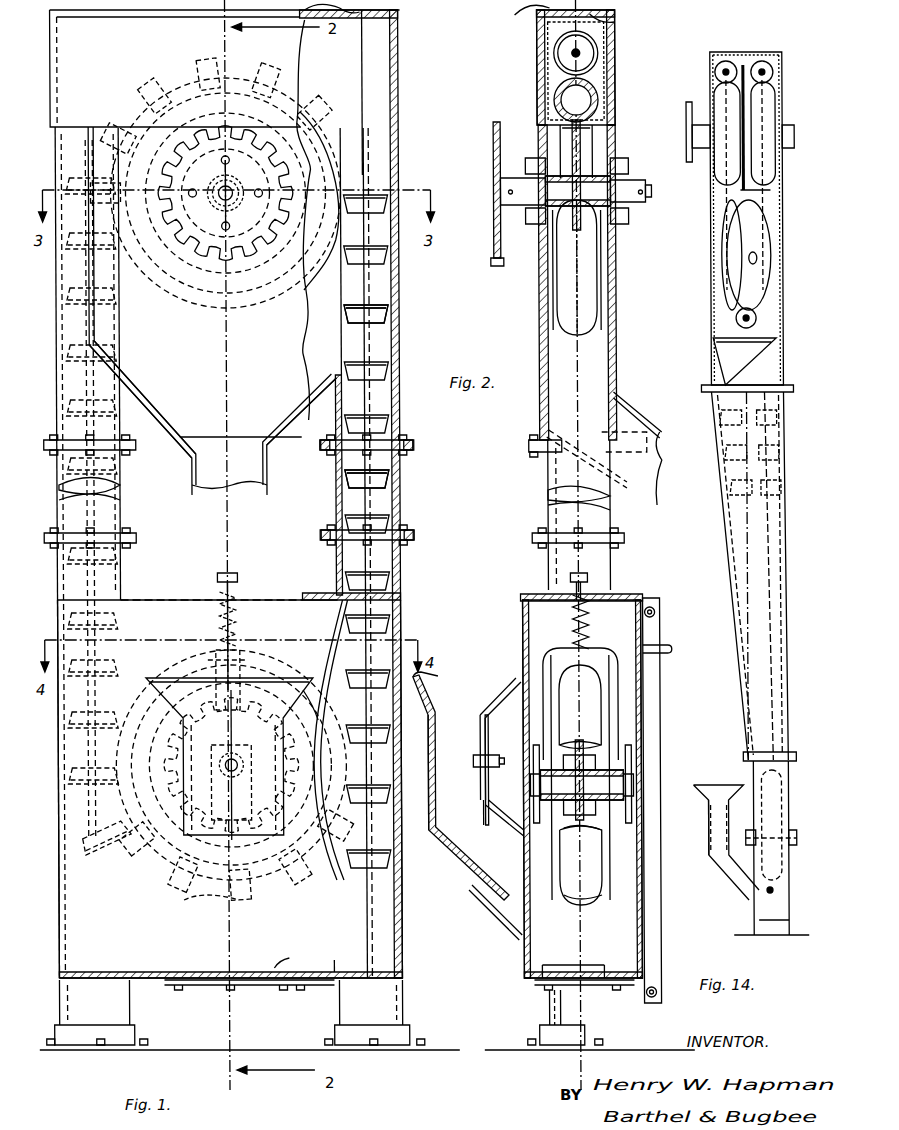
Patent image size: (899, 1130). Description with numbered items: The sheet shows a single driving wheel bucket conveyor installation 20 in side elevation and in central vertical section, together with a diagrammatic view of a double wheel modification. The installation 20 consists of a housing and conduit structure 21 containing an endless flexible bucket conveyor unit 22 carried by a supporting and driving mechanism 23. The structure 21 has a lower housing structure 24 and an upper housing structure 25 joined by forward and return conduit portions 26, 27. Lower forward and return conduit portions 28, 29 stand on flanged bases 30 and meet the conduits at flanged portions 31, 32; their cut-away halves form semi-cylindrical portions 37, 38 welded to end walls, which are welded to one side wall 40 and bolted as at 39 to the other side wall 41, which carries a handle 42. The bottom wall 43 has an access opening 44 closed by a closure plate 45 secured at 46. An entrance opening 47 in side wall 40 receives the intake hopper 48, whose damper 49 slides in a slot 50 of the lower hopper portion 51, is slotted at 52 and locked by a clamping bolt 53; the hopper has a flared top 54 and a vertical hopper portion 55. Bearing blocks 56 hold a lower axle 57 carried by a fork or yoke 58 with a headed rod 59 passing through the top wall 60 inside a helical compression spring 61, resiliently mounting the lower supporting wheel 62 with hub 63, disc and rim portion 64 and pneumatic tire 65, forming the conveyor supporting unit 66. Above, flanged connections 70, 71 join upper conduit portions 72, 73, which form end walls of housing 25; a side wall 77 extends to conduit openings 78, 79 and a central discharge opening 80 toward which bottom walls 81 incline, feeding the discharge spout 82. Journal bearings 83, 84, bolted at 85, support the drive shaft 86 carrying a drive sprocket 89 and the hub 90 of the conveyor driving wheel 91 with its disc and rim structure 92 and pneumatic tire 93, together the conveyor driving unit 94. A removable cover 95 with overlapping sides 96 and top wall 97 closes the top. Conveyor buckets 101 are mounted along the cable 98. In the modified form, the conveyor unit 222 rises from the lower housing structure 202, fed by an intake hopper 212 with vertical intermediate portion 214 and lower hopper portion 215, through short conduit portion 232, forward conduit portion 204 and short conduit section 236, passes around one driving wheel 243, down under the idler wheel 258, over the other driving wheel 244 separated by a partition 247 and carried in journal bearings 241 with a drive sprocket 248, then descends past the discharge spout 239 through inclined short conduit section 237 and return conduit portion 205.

In FIG. 1, the bucket conveyor installation 20 is at (405, 58).
In FIG. 1, the housing and conduit structure 21 is at (398, 360).
In FIG. 1, the endless flexible bucket conveyor unit 22 is at (372, 408).
In FIG. 2, the endless flexible bucket conveyor unit 22 is at (585, 50).
In FIG. 1, the supporting and driving mechanism 23 is at (322, 272).
In FIG. 1, the lower housing structure 24 is at (402, 910).
In FIG. 2, the lower housing structure 24 is at (520, 960).
In FIG. 1, the upper housing structure 25 is at (398, 152).
In FIG. 2, the upper housing structure 25 is at (535, 298).
In FIG. 1, the forward conduit portion 26 is at (398, 488).
In FIG. 1, the return conduit portion 27 is at (120, 478).
In FIG. 2, the return conduit portion 27 is at (579, 498).
In FIG. 1, the forward conduit portion 28 is at (380, 997).
In FIG. 1, the return conduit portion 29 is at (128, 997).
In FIG. 2, the return conduit portion 29 is at (600, 1022).
In FIG. 1, the flanged base 30 is at (132, 1030).
In FIG. 2, the flanged base 30 is at (535, 1033).
In FIG. 1, the flanged portion 31 is at (412, 538).
In FIG. 2, the flanged portion 31 is at (530, 535).
In FIG. 1, the flanged portion 32 is at (135, 540).
In FIG. 1, the semi-cylindrical portion 37 is at (398, 876).
In FIG. 1, the semi-cylindrical portion 38 is at (52, 865).
In FIG. 2, the bolt 39 is at (652, 612).
In FIG. 1, the side wall 40 is at (180, 590).
In FIG. 2, the side wall 40 is at (522, 620).
In FIG. 2, the side wall 41 is at (655, 712).
In FIG. 2, the handle 42 is at (665, 645).
In FIG. 1, the bottom wall 43 is at (345, 975).
In FIG. 2, the bottom wall 43 is at (582, 980).
In FIG. 1, the access opening 44 is at (287, 955).
In FIG. 2, the access opening 44 is at (603, 965).
In FIG. 1, the closure plate 45 is at (255, 988).
In FIG. 2, the closure plate 45 is at (570, 985).
In FIG. 1, the bolt 46 is at (298, 990).
In FIG. 1, the entrance opening 47 is at (198, 930).
In FIG. 2, the entrance opening 47 is at (510, 915).
In FIG. 1, the intake hopper 48 is at (262, 698).
In FIG. 2, the intake hopper 48 is at (440, 690).
In FIG. 1, the damper 49 is at (198, 848).
In FIG. 2, the damper 49 is at (483, 720).
In FIG. 2, the slot 50 is at (488, 808).
In FIG. 2, the lower hopper portion 51 is at (500, 835).
In FIG. 1, the slot 52 is at (238, 742).
In FIG. 2, the slot 52 is at (485, 742).
In FIG. 1, the clamping bolt 53 is at (240, 765).
In FIG. 2, the clamping bolt 53 is at (488, 767).
In FIG. 1, the flared top 54 is at (318, 718).
In FIG. 2, the flared top 54 is at (505, 690).
In FIG. 2, the vertical hopper portion 55 is at (450, 774).
In FIG. 2, the bearing block 56 is at (630, 740).
In FIG. 2, the lower axle 57 is at (581, 780).
In FIG. 1, the fork or yoke 58 is at (212, 660).
In FIG. 2, the fork or yoke 58 is at (615, 690).
In FIG. 1, the headed rod 59 is at (235, 585).
In FIG. 2, the headed rod 59 is at (585, 582).
In FIG. 1, the top wall 60 is at (318, 584).
In FIG. 2, the top wall 60 is at (530, 594).
In FIG. 1, the helical compression spring 61 is at (215, 622).
In FIG. 2, the helical compression spring 61 is at (571, 622).
In FIG. 2, the lower supporting wheel 62 is at (592, 872).
In FIG. 2, the hub 63 is at (592, 828).
In FIG. 2, the disc and rim portion 64 is at (606, 850).
In FIG. 2, the pneumatic tire 65 is at (598, 896).
In FIG. 1, the conveyor supporting unit 66 is at (244, 652).
In FIG. 2, the conveyor supporting unit 66 is at (620, 668).
In FIG. 1, the flanged connection 70 is at (412, 445).
In FIG. 1, the flanged connection 71 is at (135, 447).
In FIG. 2, the flanged connection 71 is at (525, 450).
In FIG. 1, the upper conduit portion 72 is at (399, 375).
In FIG. 1, the upper conduit portion 73 is at (55, 386).
In FIG. 1, the side wall 77 is at (212, 308).
In FIG. 1, the conduit opening 78 is at (335, 370).
In FIG. 1, the conduit opening 79 is at (112, 380).
In FIG. 1, the central discharge opening 80 is at (198, 488).
In FIG. 1, the bottom wall 81 is at (145, 418).
In FIG. 1, the discharge spout 82 is at (258, 478).
In FIG. 2, the discharge spout 82 is at (640, 405).
In FIG. 2, the journal bearing 83 is at (630, 210).
In FIG. 1, the journal bearing 84 is at (221, 199).
In FIG. 2, the journal bearing 84 is at (528, 220).
In FIG. 1, the bolt 85 is at (228, 220).
In FIG. 1, the drive shaft 86 is at (230, 190).
In FIG. 2, the drive shaft 86 is at (577, 191).
In FIG. 1, the drive sprocket 89 is at (258, 248).
In FIG. 2, the drive sprocket 89 is at (493, 240).
In FIG. 2, the hub 90 is at (595, 158).
In FIG. 1, the conveyor driving wheel 91 is at (325, 180).
In FIG. 2, the conveyor driving wheel 91 is at (600, 298).
In FIG. 2, the disc and rim structure 92 is at (585, 136).
In FIG. 1, the pneumatic tire 93 is at (319, 201).
In FIG. 2, the pneumatic tire 93 is at (580, 92).
In FIG. 2, the conveyor driving unit 94 is at (598, 258).
In FIG. 1, the removable cover 95 is at (380, 22).
In FIG. 2, the removable cover 95 is at (615, 22).
In FIG. 1, the overlapping sides 96 is at (398, 88).
In FIG. 2, the overlapping sides 96 is at (537, 68).
In FIG. 1, the top wall 97 is at (362, 12).
In FIG. 2, the top wall 97 is at (524, 19).
In FIG. 1, the cable 98 is at (392, 305).
In FIG. 1, the conveyor bucket 101 is at (375, 255).
In FIG. 2, the conveyor bucket 101 is at (556, 46).
In FIG. 14, the conveyor bucket 101 is at (728, 450).
In FIG. 14, the lower housing structure 202 is at (790, 802).
In FIG. 14, the forward conduit portion 204 is at (782, 532).
In FIG. 14, the return conduit portion 205 is at (722, 515).
In FIG. 14, the intake hopper 212 is at (715, 782).
In FIG. 14, the vertical intermediate portion 214 is at (703, 822).
In FIG. 14, the lower hopper portion 215 is at (748, 895).
In FIG. 14, the flexible bucket conveyor unit 222 is at (762, 62).
In FIG. 14, the short conduit portion 232 is at (780, 792).
In FIG. 14, the short conduit section 236 is at (775, 362).
In FIG. 14, the short conduit section 237 is at (712, 380).
In FIG. 14, the discharge spout 239 is at (710, 345).
In FIG. 14, the journal bearing 241 is at (712, 110).
In FIG. 14, the conveyor driving wheel 243 is at (776, 92).
In FIG. 14, the conveyor driving wheel 244 is at (718, 85).
In FIG. 14, the partition 247 is at (740, 192).
In FIG. 14, the drive sprocket 248 is at (686, 138).
In FIG. 14, the idler wheel 258 is at (735, 205).